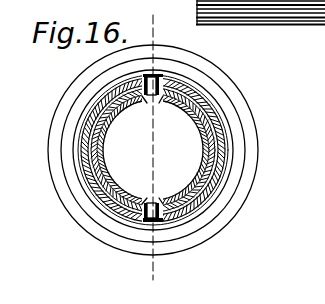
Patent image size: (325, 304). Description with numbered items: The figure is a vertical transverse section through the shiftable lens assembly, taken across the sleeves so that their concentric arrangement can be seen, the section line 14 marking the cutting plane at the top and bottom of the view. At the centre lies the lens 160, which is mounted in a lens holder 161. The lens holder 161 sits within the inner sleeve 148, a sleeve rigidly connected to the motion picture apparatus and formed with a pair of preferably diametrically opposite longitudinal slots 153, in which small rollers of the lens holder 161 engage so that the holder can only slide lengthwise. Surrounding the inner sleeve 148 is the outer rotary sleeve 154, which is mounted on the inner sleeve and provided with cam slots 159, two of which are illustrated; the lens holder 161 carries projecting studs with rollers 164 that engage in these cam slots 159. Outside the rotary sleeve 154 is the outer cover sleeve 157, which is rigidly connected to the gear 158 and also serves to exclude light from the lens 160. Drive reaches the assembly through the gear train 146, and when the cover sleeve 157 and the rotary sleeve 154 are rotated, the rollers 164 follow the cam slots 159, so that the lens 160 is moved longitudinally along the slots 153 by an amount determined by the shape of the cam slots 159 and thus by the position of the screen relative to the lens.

The section line 14- 14 is at (151, 13).
The gear train 146 is at (171, 150).
The inner sleeve 148 is at (143, 99).
The longitudinal slots 153 is at (159, 99).
The outer rotary sleeve 154 is at (179, 150).
The outer cover sleeve 157 is at (215, 106).
The gear 158 is at (200, 92).
The cam slots 159 is at (158, 77).
The lens 160 is at (184, 151).
The lens holder 161 is at (190, 150).
The rollers 164 is at (154, 203).